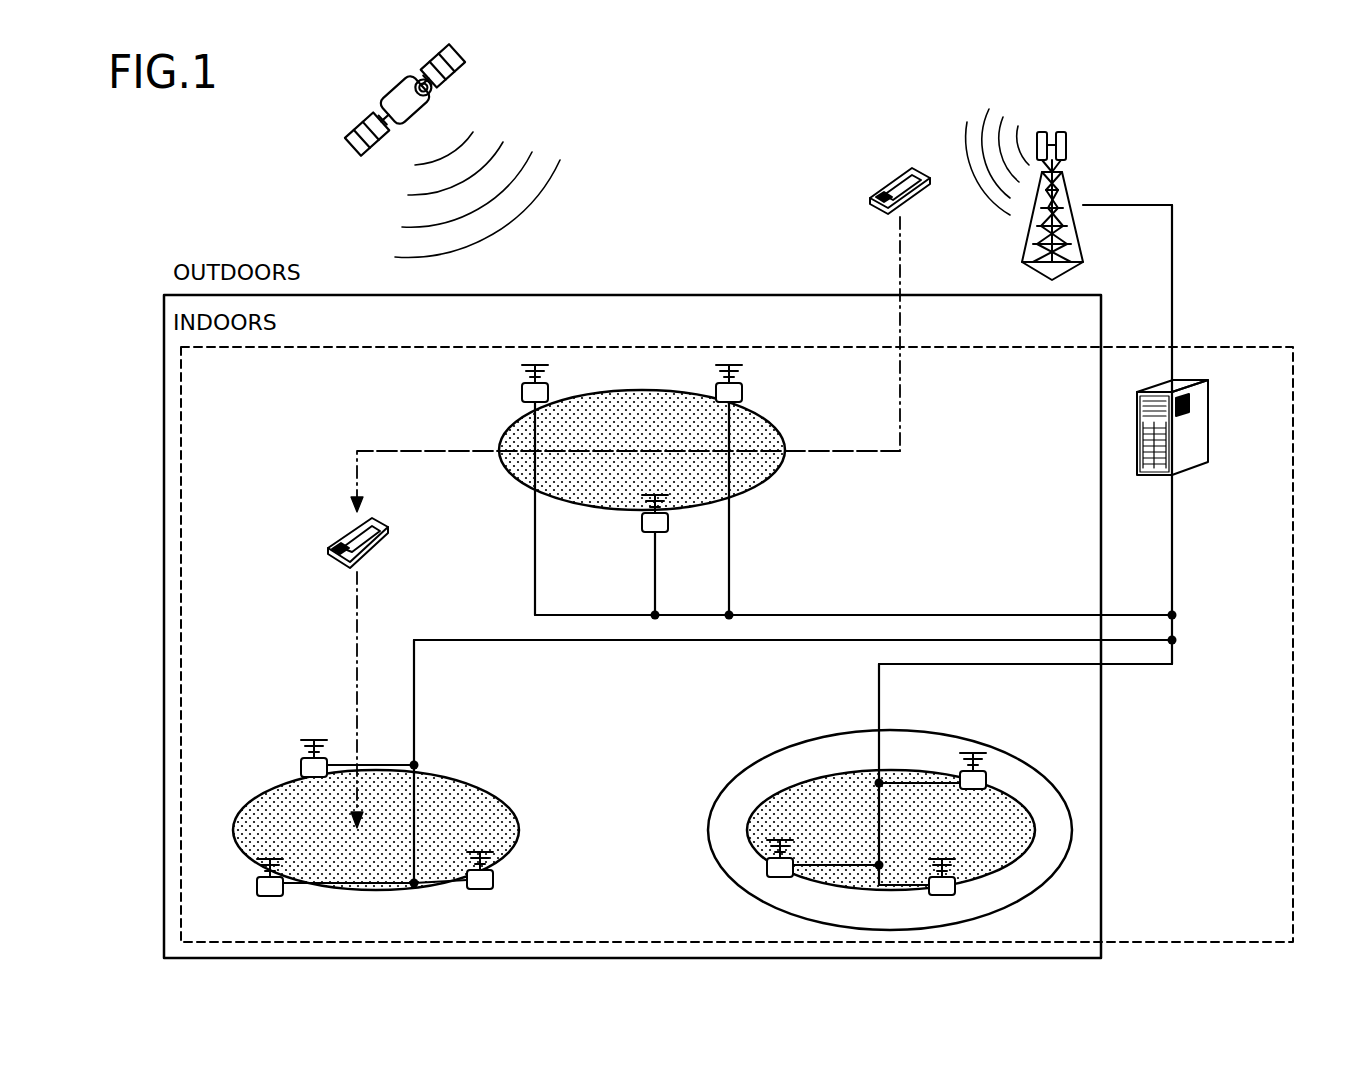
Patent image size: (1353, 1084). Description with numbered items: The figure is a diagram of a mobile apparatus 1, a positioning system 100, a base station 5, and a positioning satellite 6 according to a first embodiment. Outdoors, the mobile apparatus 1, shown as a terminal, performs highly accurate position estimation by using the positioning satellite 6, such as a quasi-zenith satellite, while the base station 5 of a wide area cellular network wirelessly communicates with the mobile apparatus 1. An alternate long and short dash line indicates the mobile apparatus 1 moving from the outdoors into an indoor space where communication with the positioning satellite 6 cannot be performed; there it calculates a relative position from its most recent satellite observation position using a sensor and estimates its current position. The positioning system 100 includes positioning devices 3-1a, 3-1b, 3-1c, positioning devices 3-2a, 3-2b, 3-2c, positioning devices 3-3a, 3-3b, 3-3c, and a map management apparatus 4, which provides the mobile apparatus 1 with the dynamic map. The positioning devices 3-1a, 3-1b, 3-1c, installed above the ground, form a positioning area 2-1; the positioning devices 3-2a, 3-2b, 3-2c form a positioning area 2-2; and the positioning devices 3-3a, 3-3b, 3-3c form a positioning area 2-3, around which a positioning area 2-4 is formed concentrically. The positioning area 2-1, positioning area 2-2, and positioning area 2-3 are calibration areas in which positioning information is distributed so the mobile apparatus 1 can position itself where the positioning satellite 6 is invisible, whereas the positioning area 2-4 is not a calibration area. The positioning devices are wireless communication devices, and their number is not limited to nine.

The mobile apparatus 1 is at (886, 176).
The positioning area 2-1 is at (760, 488).
The positioning area 2-2 is at (478, 778).
The positioning area 2-3 is at (790, 785).
The positioning area 2-4 is at (838, 732).
The positioning device 3-1a is at (522, 392).
The positioning device 3-1b is at (742, 392).
The positioning device 3-1c is at (661, 533).
The positioning device 3-2a is at (301, 768).
The positioning device 3-2b is at (494, 880).
The positioning device 3-2c is at (283, 893).
The positioning device 3-3a is at (767, 868).
The positioning device 3-3b is at (987, 780).
The positioning device 3-3c is at (955, 887).
The map management apparatus 4 is at (1209, 420).
The base station 5 is at (1083, 255).
The positioning satellite 6 is at (397, 88).
The positioning system 100 is at (1250, 346).